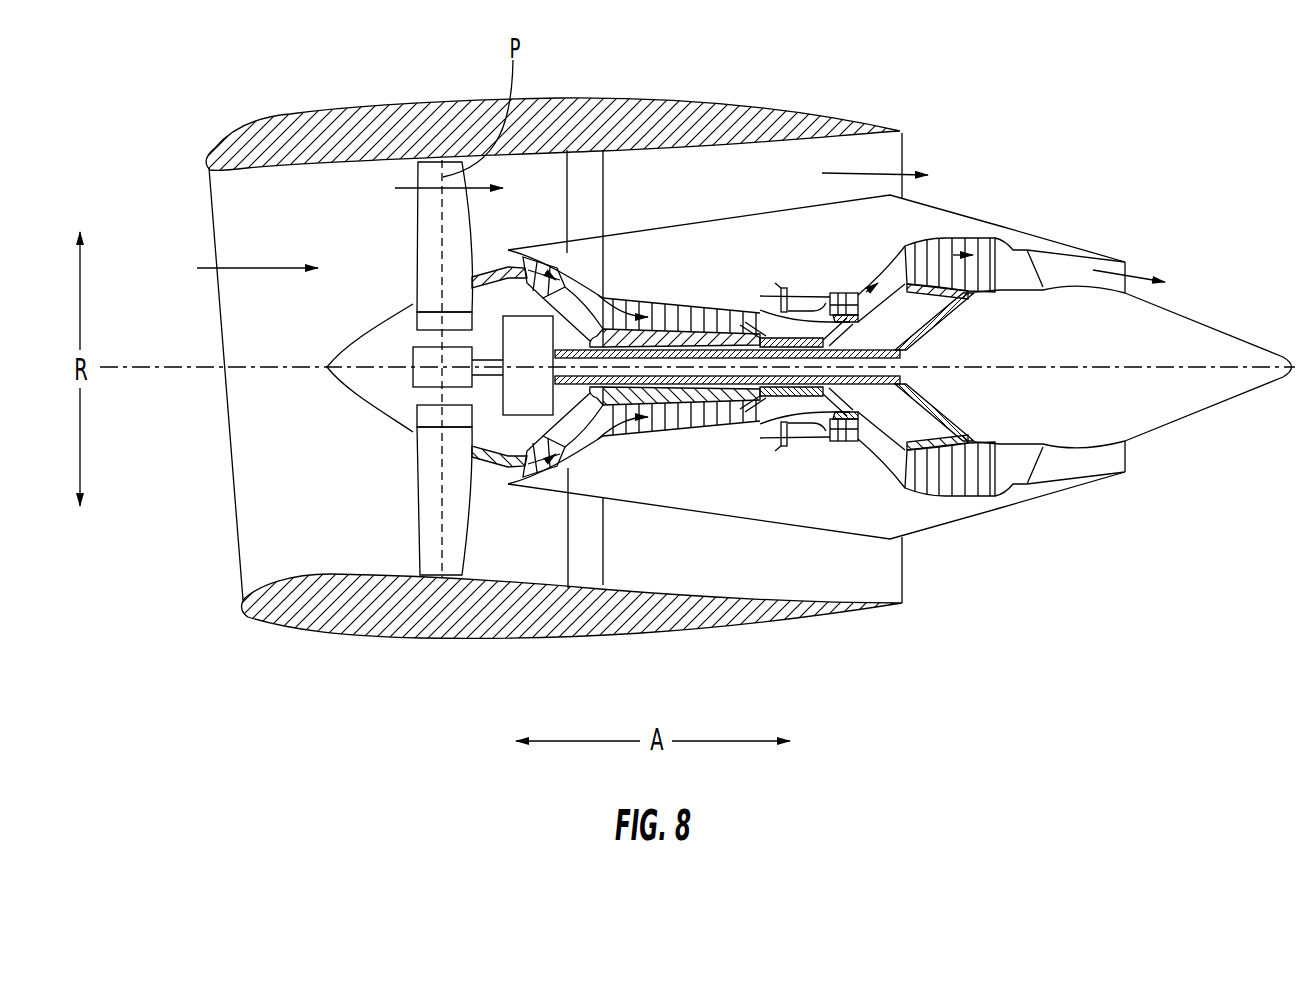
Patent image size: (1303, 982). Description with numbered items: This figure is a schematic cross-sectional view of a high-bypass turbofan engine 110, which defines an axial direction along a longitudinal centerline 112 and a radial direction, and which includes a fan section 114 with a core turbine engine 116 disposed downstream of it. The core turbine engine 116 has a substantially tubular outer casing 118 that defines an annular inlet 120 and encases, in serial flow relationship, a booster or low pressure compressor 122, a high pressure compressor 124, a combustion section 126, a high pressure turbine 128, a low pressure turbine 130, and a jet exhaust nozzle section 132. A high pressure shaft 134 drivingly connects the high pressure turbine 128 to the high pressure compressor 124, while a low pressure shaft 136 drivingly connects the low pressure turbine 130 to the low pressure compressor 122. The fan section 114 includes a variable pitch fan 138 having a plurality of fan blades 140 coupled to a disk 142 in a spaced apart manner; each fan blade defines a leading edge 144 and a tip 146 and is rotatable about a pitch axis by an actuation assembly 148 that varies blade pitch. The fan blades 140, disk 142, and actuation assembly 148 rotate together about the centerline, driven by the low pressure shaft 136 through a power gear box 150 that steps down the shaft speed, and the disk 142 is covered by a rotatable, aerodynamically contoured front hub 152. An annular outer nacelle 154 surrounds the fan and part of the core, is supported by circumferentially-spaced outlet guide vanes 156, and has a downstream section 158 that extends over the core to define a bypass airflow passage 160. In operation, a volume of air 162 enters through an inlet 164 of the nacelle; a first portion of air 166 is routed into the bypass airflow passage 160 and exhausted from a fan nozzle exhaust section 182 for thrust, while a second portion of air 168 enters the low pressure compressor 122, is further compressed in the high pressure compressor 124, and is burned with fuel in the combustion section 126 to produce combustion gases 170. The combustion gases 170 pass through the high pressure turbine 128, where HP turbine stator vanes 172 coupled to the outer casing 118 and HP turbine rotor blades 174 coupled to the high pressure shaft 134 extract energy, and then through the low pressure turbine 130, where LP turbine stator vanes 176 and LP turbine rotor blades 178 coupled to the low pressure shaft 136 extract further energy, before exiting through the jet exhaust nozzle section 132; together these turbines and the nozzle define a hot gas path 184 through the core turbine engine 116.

The turbofan engine 110 is at (1045, 112).
The longitudinal centerline 112 is at (1067, 367).
The fan section 114 is at (456, 64).
The core turbine engine 116 is at (764, 257).
The outer casing 118 is at (763, 528).
The annular inlet 120 is at (490, 474).
The low pressure compressor 122 is at (570, 440).
The high pressure compressor 124 is at (633, 436).
The combustion section 126 is at (801, 440).
The high pressure turbine 128 is at (877, 437).
The low pressure turbine 130 is at (983, 496).
The jet exhaust nozzle section 132 is at (1046, 484).
The high pressure shaft 134 is at (858, 318).
The low pressure shaft 136 is at (920, 340).
The variable pitch fan 138 is at (378, 424).
The fan blades 140 is at (417, 515).
The disk 142 is at (437, 325).
The leading edge 144 is at (405, 253).
The tip 146 is at (433, 160).
The actuation assembly 148 is at (410, 347).
The power gear box 150 is at (540, 340).
The front hub 152 is at (347, 388).
The outer nacelle 154 is at (463, 637).
The outlet guide vanes 156 is at (603, 178).
The downstream section 158 is at (823, 122).
The bypass airflow passage 160 is at (832, 170).
The volume of air 162 is at (260, 267).
The inlet 164 is at (238, 590).
The first portion of air 166 is at (430, 185).
The second portion of air 168 is at (490, 262).
The combustion gases 170 is at (945, 246).
The HP turbine stator vanes 172 is at (818, 442).
The HP turbine rotor blades 174 is at (850, 418).
The LP turbine stator vanes 176 is at (913, 475).
The LP turbine rotor blades 178 is at (920, 487).
The fan nozzle exhaust section 182 is at (890, 158).
The hot gas path 184 is at (895, 256).